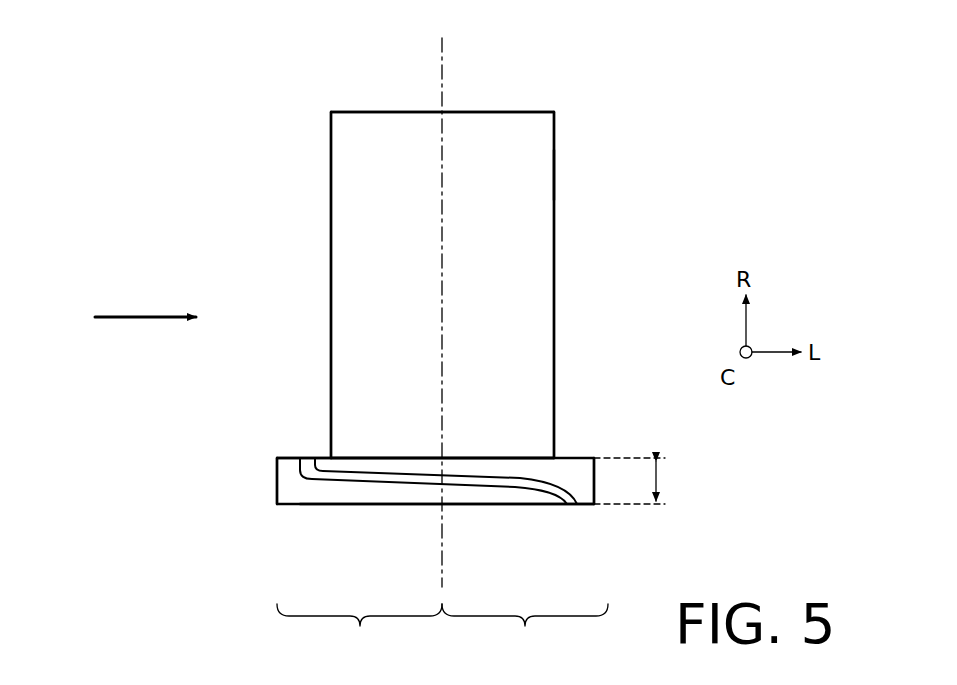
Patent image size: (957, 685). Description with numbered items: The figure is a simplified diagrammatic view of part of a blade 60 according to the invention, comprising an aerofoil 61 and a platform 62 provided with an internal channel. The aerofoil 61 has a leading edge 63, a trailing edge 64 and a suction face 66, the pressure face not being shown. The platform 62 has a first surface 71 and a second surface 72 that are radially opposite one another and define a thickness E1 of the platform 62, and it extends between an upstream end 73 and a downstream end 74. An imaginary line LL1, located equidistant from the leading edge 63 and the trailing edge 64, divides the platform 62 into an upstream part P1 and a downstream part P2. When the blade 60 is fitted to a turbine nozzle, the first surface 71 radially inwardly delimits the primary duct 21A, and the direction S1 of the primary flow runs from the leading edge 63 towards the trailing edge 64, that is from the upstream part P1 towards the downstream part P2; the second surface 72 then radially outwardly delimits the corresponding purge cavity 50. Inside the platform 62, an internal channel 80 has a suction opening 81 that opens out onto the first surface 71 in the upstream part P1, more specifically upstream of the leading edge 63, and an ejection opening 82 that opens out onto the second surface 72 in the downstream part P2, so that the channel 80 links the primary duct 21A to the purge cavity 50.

The purge cavity 50 is at (403, 475).
The blade 60 is at (310, 74).
The aerofoil 61 is at (490, 111).
The platform 62 is at (406, 506).
The leading edge 63 is at (328, 214).
The trailing edge 64 is at (559, 274).
The suction face 66 is at (519, 172).
The first surface 71 is at (287, 453).
The second surface 72 is at (496, 507).
The upstream end 73 is at (276, 476).
The downstream end 74 is at (596, 480).
The internal channel 80 is at (356, 483).
The suction opening 81 is at (310, 457).
The ejection opening 82 is at (572, 507).
The primary duct 21A is at (254, 264).
The imaginary line LL1 is at (440, 85).
The direction of flow S1 is at (146, 314).
The thickness E1 is at (644, 481).
The upstream part P1 is at (359, 631).
The downstream part P2 is at (525, 631).